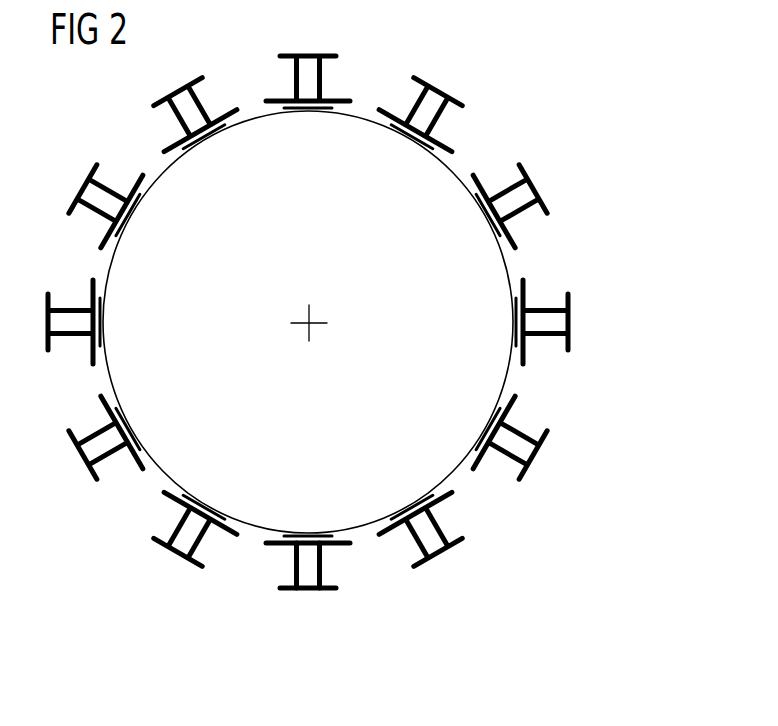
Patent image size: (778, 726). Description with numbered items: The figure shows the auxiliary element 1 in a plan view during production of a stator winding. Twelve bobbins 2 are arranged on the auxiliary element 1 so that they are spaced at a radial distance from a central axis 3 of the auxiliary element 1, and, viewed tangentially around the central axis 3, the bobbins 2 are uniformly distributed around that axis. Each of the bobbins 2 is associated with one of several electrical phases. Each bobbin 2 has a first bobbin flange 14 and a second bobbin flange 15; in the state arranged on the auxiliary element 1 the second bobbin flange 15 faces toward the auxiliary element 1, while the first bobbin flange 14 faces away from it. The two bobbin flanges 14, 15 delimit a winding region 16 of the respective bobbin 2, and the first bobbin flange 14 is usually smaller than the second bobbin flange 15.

The auxiliary element 1 is at (362, 111).
The bobbins 2 is at (333, 342).
The central axis 3 is at (302, 322).
The first bobbin flange 14 is at (328, 592).
The second bobbin flange 15 is at (278, 547).
The winding region 16 is at (326, 568).